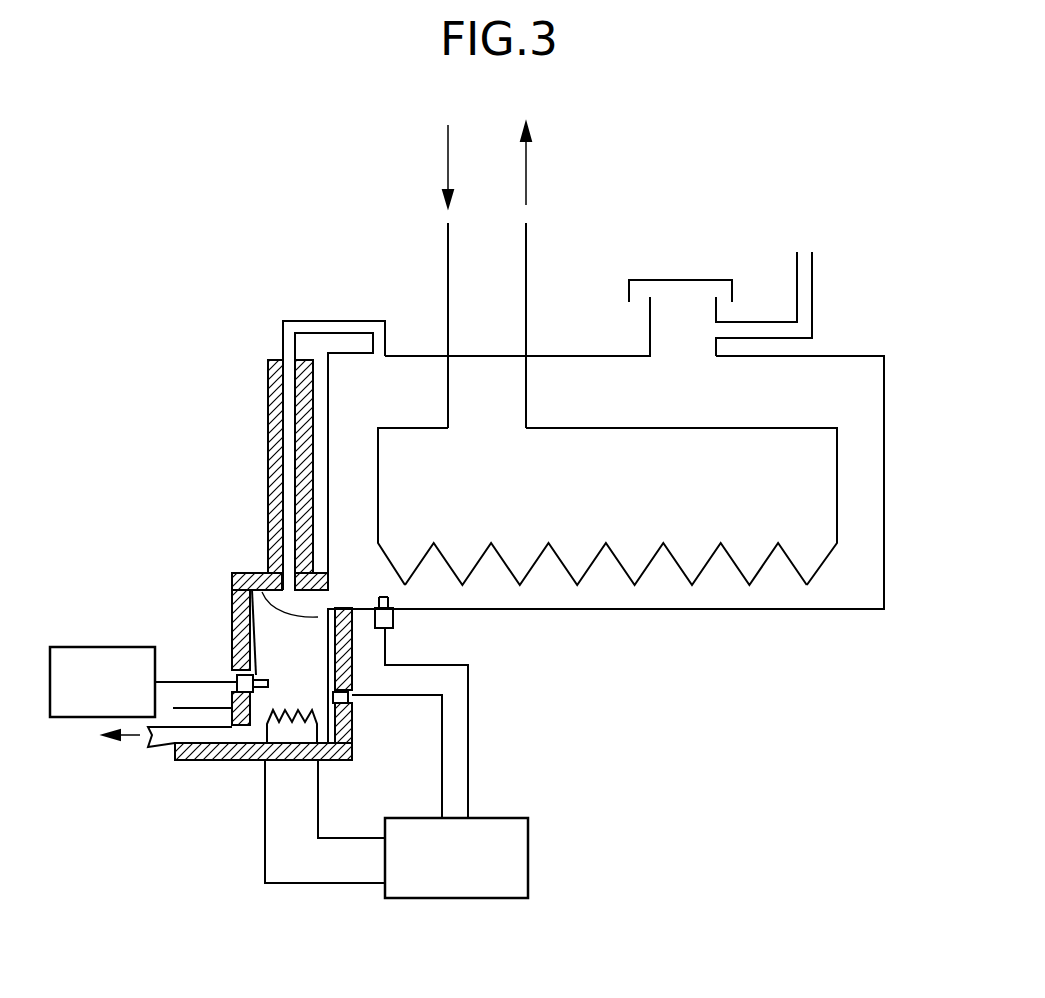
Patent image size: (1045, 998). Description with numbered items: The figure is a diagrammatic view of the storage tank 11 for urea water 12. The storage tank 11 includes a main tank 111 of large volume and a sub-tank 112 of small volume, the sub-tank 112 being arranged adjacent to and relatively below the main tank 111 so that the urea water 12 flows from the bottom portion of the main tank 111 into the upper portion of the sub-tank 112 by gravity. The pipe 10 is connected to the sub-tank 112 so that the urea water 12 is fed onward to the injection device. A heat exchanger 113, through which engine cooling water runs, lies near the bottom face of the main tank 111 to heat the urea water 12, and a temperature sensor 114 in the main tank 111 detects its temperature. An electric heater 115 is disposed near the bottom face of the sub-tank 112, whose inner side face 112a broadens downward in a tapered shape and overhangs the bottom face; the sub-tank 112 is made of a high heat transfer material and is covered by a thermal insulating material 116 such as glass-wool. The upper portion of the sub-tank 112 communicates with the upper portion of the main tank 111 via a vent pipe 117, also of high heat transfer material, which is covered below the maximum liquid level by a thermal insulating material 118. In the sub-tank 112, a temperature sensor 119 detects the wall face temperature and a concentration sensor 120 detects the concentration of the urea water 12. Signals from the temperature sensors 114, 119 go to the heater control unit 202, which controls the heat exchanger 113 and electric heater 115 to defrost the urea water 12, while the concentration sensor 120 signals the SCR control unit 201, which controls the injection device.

The pipe 10 is at (150, 745).
The storage tank 11 is at (884, 565).
The urea water 12 is at (870, 425).
The main tank 111 is at (822, 356).
The sub-tank 112 is at (232, 612).
The inner side face 112a is at (247, 578).
The heat exchanger 113 is at (673, 563).
The temperature sensor 114 is at (393, 617).
The electric heater 115 is at (293, 742).
The thermal insulating material 116 is at (232, 640).
The vent pipe 117 is at (283, 345).
The thermal insulating material 118 is at (268, 420).
The temperature sensor 119 is at (352, 700).
The concentration sensor 120 is at (235, 680).
The SCR control unit 201 is at (110, 647).
The heater control unit 202 is at (528, 855).